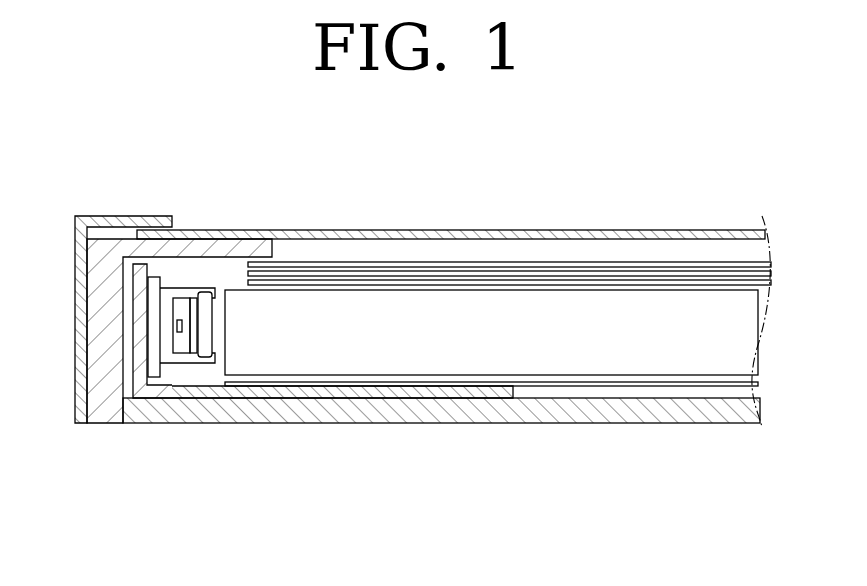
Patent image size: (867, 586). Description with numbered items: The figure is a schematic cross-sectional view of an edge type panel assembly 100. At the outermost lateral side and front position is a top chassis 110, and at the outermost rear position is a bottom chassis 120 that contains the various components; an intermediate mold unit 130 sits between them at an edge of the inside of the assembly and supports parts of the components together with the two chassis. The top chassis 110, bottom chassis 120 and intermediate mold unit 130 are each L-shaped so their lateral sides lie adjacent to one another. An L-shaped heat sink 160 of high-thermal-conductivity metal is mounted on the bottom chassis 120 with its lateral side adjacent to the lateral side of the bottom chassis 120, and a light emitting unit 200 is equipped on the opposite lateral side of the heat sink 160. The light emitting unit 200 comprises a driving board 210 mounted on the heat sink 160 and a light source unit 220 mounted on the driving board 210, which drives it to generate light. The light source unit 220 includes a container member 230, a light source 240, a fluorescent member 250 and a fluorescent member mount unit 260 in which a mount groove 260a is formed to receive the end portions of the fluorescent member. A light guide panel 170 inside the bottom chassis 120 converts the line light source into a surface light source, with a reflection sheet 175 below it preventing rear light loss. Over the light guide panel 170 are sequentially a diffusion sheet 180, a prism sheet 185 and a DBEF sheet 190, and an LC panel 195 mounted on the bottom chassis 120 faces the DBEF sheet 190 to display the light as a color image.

The edge type panel assembly 100 is at (94, 170).
The top chassis 110 is at (92, 217).
The bottom chassis 120 is at (563, 408).
The intermediate mold unit 130 is at (103, 343).
The heat sink 160 is at (468, 392).
The light guide panel 170 is at (637, 303).
The reflection sheet 175 is at (720, 386).
The diffusion sheet 180 is at (565, 285).
The prism sheet 185 is at (490, 273).
The dual brightness enhancement film (DBEF) sheet 190 is at (427, 263).
The LC panel 195 is at (353, 237).
The light emitting unit 200 is at (183, 520).
The driving board 210 is at (137, 365).
The light source unit 220 is at (262, 472).
The container member 230 is at (158, 372).
The light source 240 is at (181, 354).
The fluorescent member 250 is at (197, 354).
The fluorescent member mount unit 260 is at (216, 364).
The mount groove 260a is at (205, 289).